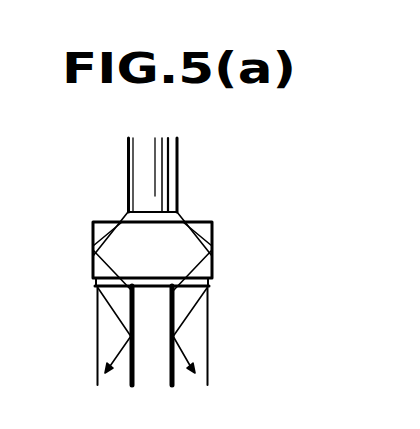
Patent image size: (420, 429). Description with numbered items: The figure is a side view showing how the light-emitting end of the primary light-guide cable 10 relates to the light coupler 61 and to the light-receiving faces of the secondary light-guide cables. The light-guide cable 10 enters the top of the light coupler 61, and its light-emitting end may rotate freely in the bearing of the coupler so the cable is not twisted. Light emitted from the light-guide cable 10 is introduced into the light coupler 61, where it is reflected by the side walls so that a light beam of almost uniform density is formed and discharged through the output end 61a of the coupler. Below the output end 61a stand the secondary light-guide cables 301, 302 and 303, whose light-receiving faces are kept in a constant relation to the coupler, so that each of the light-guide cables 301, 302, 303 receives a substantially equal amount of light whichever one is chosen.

The light-guide cable 10 is at (177, 172).
The light coupler 61 is at (203, 230).
The output end 61a is at (187, 285).
The light-guide cable 301 is at (105, 343).
The light-guide cable 302 is at (152, 370).
The light-guide cable 303 is at (200, 342).